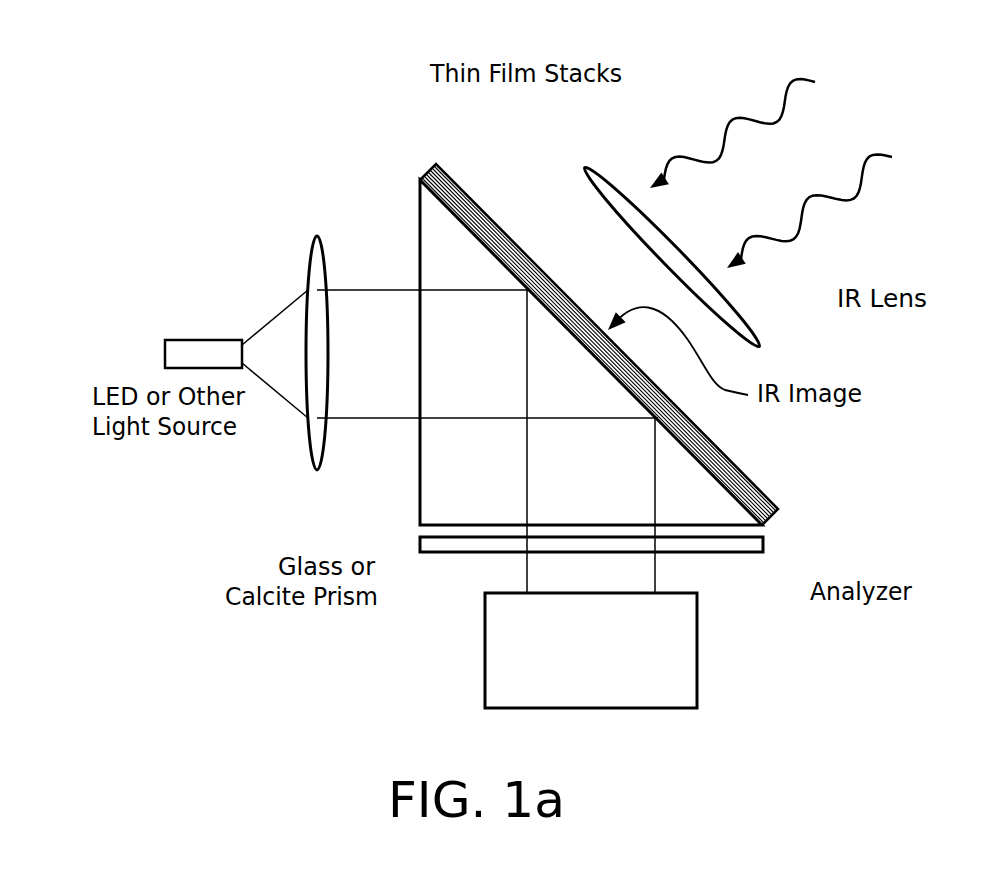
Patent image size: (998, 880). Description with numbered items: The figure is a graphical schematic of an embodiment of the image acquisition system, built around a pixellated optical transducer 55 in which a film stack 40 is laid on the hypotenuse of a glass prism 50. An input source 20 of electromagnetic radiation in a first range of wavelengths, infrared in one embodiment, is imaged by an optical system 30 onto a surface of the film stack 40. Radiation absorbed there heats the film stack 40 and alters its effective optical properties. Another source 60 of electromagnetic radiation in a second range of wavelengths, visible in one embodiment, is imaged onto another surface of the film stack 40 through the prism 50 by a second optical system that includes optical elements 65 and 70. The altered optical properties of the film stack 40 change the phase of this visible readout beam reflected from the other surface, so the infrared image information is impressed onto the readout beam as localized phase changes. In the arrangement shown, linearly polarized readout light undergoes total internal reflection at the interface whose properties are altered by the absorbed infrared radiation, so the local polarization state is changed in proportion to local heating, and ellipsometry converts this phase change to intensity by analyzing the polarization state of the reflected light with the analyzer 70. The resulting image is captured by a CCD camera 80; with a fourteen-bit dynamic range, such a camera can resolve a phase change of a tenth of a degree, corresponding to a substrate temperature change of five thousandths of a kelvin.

The input source 20 is at (875, 97).
The optical system 30 is at (735, 307).
The film stack 40 is at (470, 190).
The glass prism 50 is at (440, 475).
The pixellated optical transducer 55 is at (424, 146).
The source 60 is at (200, 338).
The optical element 65 is at (308, 262).
The optical element 70 is at (727, 553).
The CCD camera 80 is at (698, 650).